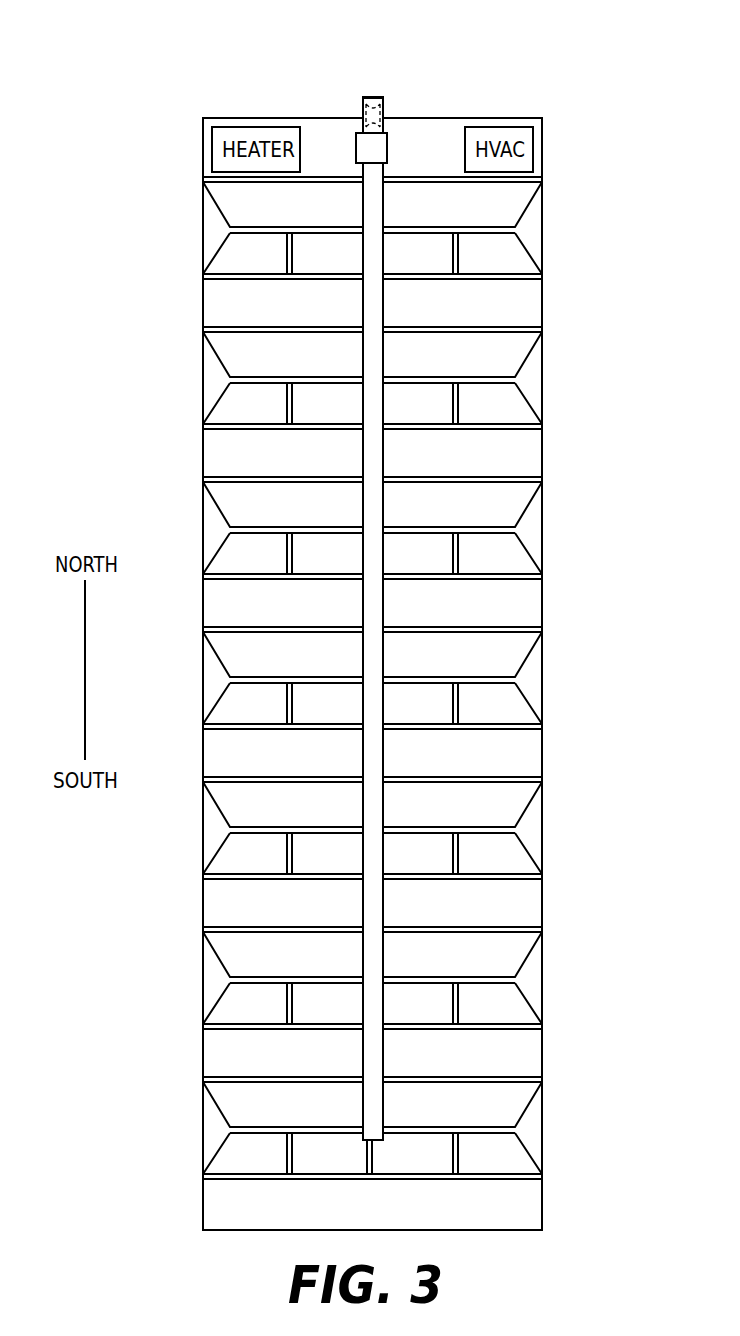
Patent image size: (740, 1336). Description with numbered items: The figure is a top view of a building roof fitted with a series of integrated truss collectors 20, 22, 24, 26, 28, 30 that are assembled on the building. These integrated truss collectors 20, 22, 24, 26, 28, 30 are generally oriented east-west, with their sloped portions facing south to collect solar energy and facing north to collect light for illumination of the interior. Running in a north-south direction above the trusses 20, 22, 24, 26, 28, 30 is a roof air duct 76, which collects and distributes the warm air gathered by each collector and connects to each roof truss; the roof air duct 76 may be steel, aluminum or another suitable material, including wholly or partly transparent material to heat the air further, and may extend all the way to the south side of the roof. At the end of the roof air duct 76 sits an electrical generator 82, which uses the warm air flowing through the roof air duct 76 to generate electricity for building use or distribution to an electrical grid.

The integrated truss collector 20 is at (406, 978).
The integrated truss collector 22 is at (406, 828).
The integrated truss collector 24 is at (406, 678).
The integrated truss collector 26 is at (406, 528).
The integrated truss collector 28 is at (406, 378).
The integrated truss collector 30 is at (406, 228).
The roof air duct 76 is at (362, 1053).
The electrical generator 82 is at (388, 133).